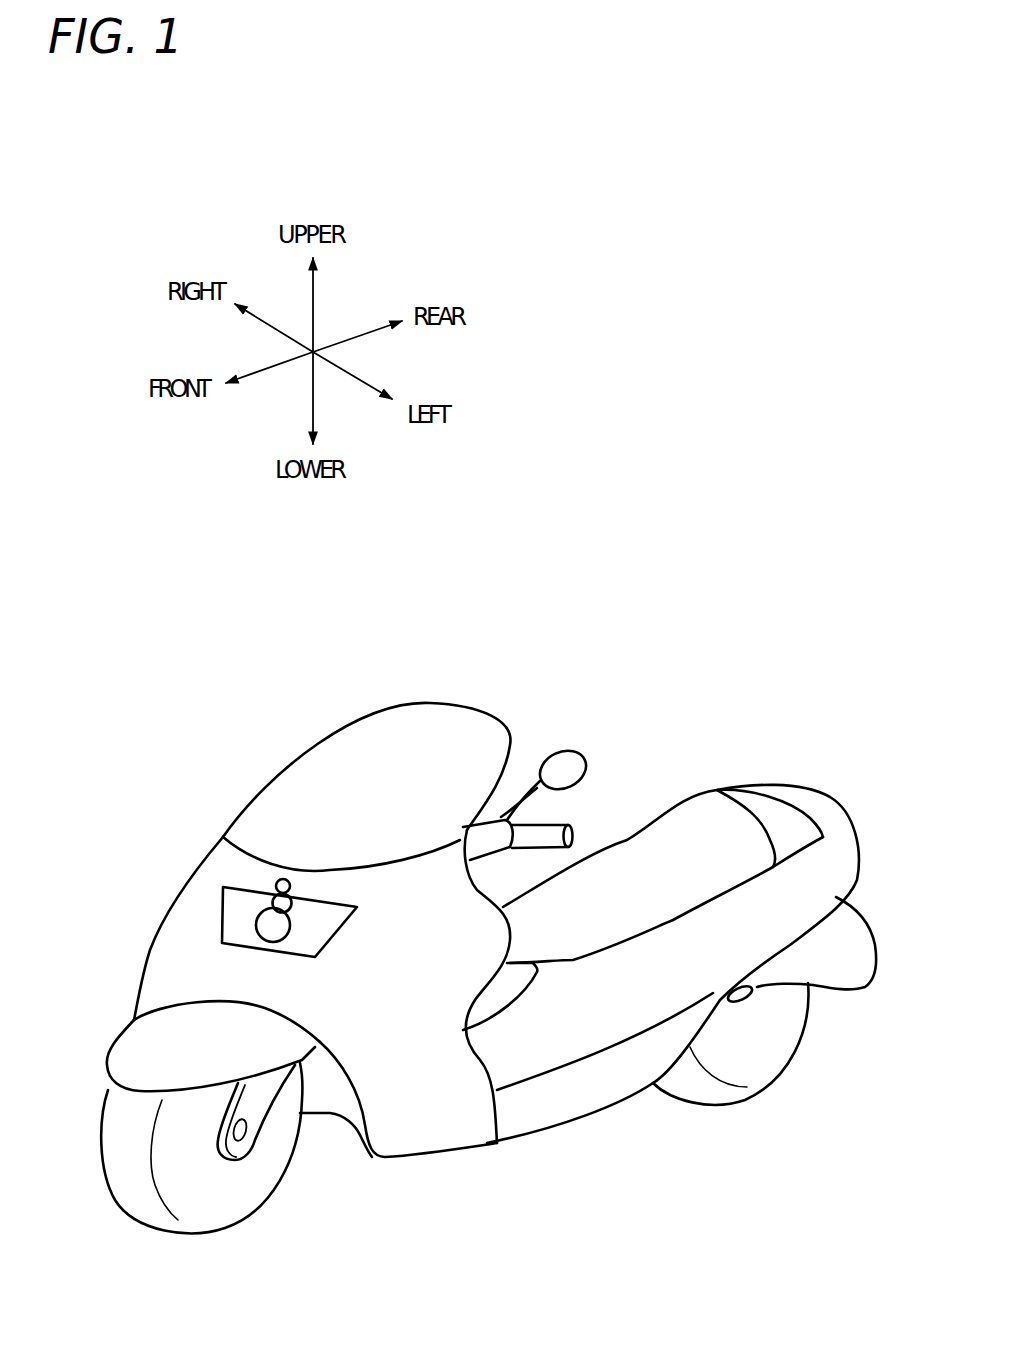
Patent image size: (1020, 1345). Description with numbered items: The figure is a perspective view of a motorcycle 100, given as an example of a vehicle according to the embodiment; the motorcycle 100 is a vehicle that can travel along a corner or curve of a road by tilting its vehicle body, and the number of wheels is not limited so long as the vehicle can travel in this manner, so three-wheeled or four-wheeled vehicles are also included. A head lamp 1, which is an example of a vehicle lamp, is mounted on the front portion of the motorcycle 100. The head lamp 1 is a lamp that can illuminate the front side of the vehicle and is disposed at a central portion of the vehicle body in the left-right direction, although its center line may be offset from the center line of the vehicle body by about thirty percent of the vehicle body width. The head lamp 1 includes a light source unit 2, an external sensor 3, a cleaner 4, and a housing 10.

The motorcycle 100 is at (604, 672).
The head lamp 1 is at (308, 885).
The housing 10 is at (335, 937).
The light source unit 2 is at (263, 925).
The external sensor 3 is at (273, 900).
The cleaner 4 is at (275, 885).